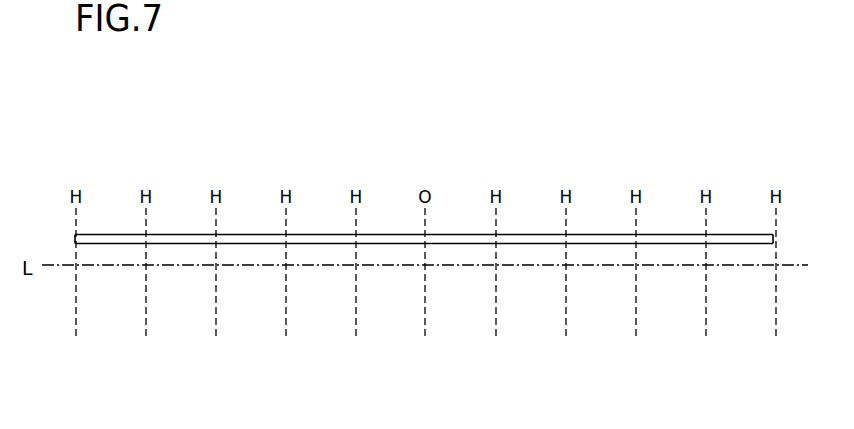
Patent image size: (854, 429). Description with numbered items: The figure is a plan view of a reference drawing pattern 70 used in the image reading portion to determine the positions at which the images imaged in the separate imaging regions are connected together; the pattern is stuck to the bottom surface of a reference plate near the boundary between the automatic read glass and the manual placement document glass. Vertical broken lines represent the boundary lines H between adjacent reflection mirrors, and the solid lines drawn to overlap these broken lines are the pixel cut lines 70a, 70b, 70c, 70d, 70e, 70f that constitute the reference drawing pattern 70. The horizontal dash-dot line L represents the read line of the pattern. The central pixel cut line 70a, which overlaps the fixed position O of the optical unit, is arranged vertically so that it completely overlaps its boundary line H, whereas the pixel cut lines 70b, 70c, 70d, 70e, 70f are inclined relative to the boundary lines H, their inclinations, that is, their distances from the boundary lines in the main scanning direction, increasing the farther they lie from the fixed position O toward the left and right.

The reference drawing pattern 70 is at (423, 244).
The pixel cut line 70a is at (425, 244).
The pixel cut line 70b is at (358, 244).
The pixel cut line 70c is at (287, 244).
The pixel cut line 70d is at (218, 244).
The pixel cut line 70e is at (152, 244).
The pixel cut line 70f is at (82, 244).